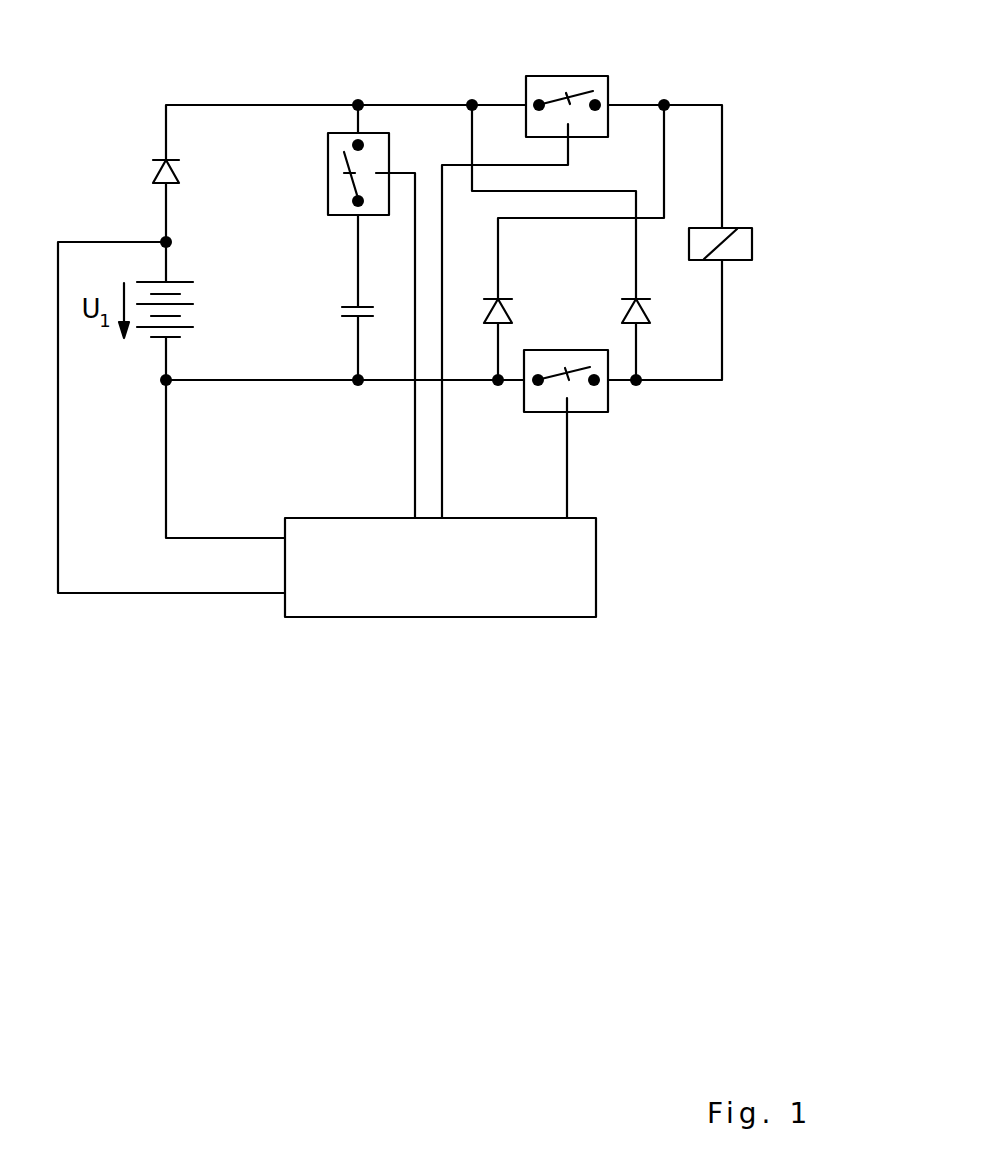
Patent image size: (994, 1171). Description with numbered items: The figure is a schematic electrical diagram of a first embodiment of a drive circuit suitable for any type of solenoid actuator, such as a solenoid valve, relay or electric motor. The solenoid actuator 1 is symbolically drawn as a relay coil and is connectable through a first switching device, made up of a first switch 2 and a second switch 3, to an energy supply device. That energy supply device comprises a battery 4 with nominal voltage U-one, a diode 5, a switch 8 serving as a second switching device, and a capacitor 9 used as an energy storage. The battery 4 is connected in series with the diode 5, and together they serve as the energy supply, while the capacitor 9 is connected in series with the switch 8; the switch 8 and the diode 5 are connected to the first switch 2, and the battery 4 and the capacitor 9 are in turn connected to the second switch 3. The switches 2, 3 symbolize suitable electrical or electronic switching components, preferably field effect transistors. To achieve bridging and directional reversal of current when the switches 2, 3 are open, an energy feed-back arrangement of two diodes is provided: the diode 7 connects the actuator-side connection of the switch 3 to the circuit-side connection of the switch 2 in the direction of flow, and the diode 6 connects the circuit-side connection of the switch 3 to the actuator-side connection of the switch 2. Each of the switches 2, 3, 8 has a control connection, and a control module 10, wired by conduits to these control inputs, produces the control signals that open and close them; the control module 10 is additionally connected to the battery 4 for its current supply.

The solenoid actuator 1 is at (752, 242).
The first switch 2 is at (579, 76).
The second switch 3 is at (590, 413).
The battery 4 is at (180, 282).
The diode 5 is at (153, 178).
The diode 6 is at (514, 304).
The diode 7 is at (652, 304).
The switch 8 is at (328, 162).
The capacitor 9 is at (345, 323).
The control module 10 is at (598, 565).